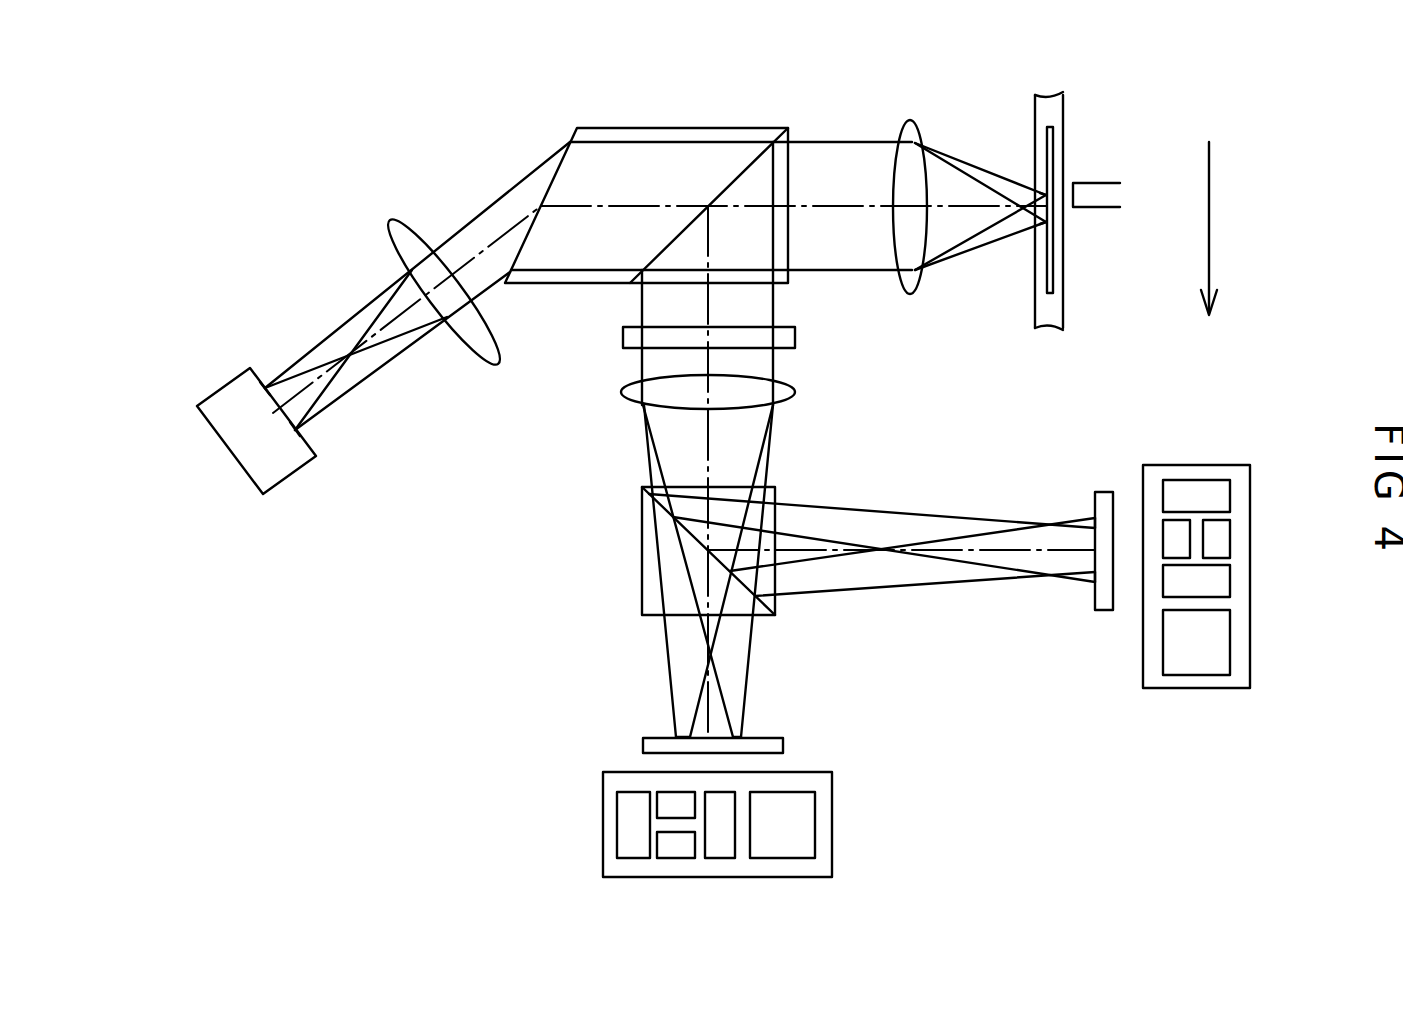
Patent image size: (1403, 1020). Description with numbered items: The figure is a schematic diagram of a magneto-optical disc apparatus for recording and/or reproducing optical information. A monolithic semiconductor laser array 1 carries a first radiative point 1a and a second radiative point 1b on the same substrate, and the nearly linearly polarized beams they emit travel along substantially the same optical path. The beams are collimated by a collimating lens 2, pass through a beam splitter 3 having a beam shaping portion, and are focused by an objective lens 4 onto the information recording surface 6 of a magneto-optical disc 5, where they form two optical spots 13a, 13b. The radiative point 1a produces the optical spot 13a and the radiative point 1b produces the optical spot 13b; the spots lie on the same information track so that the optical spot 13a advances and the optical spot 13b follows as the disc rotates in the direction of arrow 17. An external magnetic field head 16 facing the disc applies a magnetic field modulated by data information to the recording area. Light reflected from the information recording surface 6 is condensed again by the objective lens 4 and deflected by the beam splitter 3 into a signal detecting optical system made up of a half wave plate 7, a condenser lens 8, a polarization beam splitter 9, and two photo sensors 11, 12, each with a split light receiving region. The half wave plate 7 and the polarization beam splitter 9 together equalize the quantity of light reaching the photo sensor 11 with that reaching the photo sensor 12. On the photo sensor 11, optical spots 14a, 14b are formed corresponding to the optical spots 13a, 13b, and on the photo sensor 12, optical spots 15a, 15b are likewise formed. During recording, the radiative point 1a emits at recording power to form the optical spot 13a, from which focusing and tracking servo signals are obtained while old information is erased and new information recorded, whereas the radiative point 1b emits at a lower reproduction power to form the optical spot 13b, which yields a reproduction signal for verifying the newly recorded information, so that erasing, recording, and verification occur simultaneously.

The monolithic semiconductor laser array 1 is at (248, 382).
The first radiative point 1a is at (292, 440).
The second radiative point 1b is at (253, 398).
The collimating lens 2 is at (392, 220).
The beam splitter with a beam shaping portion 3 is at (692, 127).
The objective lens 4 is at (908, 125).
The magneto-optical disc 5 is at (1053, 105).
The information recording surface 6 is at (1057, 137).
The half wave plate 7 is at (798, 337).
The condenser lens 8 is at (796, 392).
The polarization beam splitter 9 is at (640, 555).
The photo sensor 11 is at (785, 745).
The photo sensor 12 is at (1100, 492).
The optical spot 13a is at (1046, 190).
The optical spot 13b is at (1046, 223).
The optical spot 14a is at (680, 735).
The optical spot 14b is at (745, 728).
The optical spot 15a is at (1095, 522).
The optical spot 15b is at (1093, 576).
The external magnetic field head 16 is at (1103, 198).
The arrow 17 is at (1211, 218).